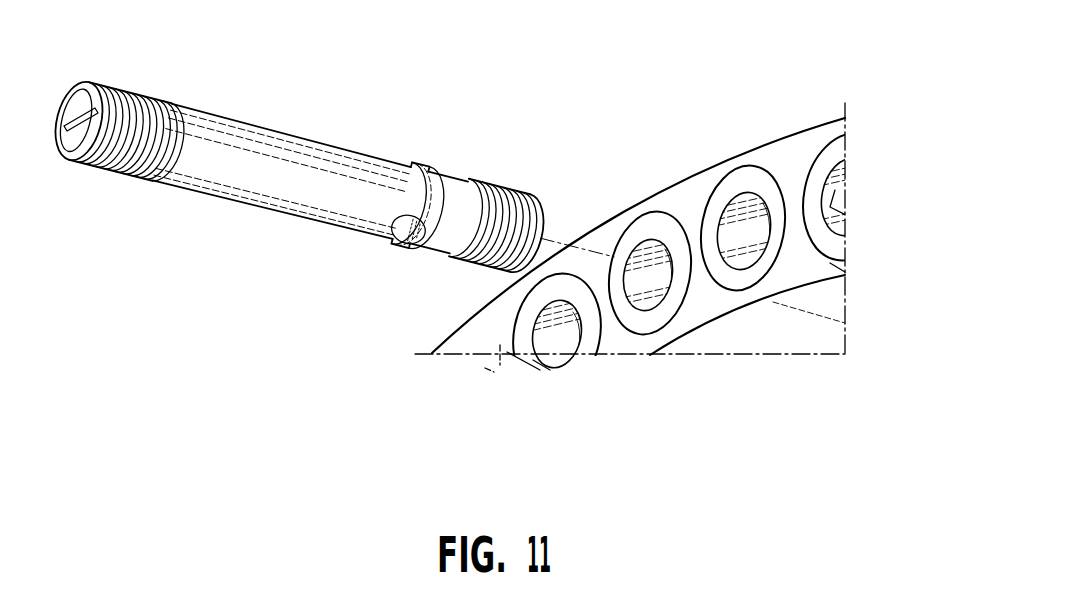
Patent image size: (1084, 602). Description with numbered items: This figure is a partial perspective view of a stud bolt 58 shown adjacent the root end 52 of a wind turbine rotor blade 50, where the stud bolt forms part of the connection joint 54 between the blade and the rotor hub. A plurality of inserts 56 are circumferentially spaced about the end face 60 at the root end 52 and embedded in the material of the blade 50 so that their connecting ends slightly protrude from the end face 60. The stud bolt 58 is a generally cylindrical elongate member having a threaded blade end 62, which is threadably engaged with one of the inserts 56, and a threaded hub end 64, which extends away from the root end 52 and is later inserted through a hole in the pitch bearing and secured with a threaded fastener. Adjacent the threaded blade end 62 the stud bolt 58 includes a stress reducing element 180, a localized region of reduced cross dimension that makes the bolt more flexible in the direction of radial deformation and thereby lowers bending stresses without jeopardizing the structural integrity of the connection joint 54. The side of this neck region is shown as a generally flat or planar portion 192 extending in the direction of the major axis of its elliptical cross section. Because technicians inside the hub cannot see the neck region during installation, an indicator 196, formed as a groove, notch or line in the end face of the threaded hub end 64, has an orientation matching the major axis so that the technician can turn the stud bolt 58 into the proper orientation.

The rotor blade 50 is at (672, 275).
The root end 52 is at (482, 345).
The connection joint 54 is at (604, 222).
The inserts 56 is at (655, 222).
The stud bolts 58 is at (294, 170).
The end face 60 is at (706, 190).
The threaded blade end 62 is at (503, 197).
The threaded hub end 64 is at (135, 86).
The stress reducing element 180 is at (390, 248).
The flat or planar portion 192 is at (427, 236).
The indicator 196 is at (77, 118).